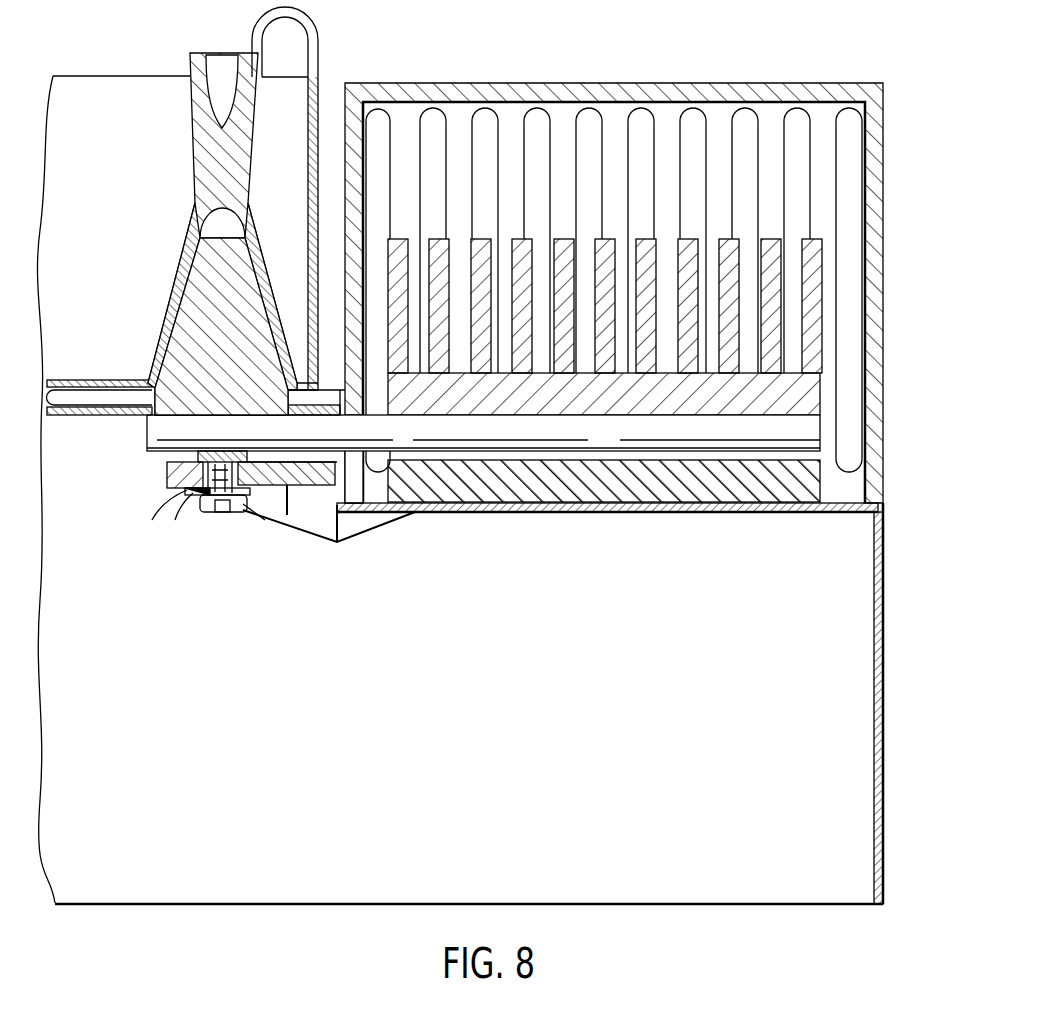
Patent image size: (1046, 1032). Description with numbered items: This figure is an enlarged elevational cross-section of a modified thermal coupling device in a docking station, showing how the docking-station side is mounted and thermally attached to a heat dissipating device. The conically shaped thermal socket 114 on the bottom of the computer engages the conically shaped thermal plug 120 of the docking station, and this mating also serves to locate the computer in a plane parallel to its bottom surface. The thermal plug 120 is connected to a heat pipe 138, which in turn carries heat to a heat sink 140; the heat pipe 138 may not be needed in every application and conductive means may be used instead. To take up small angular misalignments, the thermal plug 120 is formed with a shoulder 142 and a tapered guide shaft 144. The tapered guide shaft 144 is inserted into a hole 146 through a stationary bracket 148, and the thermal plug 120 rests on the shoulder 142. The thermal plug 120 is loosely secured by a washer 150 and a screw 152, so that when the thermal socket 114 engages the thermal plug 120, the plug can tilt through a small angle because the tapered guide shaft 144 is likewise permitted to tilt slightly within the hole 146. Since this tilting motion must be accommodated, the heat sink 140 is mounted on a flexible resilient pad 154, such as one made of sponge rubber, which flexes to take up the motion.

The thermal socket 114 is at (196, 205).
The thermal plug 120 is at (207, 283).
The heat pipe 138 is at (147, 428).
The heat sink 140 is at (685, 240).
The shoulder 142 is at (198, 456).
The tapered guide shaft 144 is at (212, 497).
The hole 146 is at (195, 471).
The stationary bracket 148 is at (288, 485).
The washer 150 is at (200, 497).
The screw 152 is at (203, 512).
The flexible resilient pad 154 is at (527, 493).